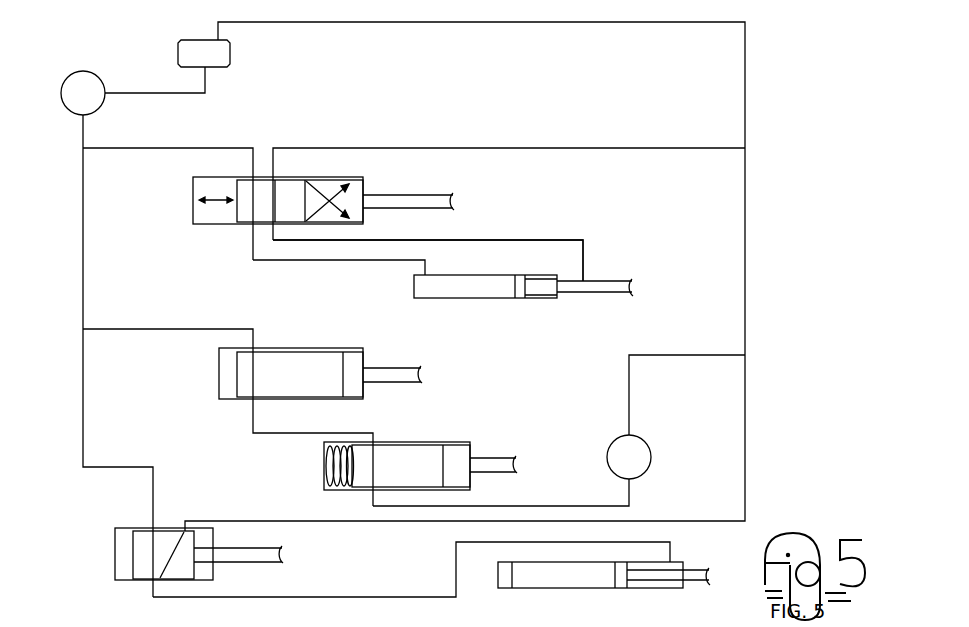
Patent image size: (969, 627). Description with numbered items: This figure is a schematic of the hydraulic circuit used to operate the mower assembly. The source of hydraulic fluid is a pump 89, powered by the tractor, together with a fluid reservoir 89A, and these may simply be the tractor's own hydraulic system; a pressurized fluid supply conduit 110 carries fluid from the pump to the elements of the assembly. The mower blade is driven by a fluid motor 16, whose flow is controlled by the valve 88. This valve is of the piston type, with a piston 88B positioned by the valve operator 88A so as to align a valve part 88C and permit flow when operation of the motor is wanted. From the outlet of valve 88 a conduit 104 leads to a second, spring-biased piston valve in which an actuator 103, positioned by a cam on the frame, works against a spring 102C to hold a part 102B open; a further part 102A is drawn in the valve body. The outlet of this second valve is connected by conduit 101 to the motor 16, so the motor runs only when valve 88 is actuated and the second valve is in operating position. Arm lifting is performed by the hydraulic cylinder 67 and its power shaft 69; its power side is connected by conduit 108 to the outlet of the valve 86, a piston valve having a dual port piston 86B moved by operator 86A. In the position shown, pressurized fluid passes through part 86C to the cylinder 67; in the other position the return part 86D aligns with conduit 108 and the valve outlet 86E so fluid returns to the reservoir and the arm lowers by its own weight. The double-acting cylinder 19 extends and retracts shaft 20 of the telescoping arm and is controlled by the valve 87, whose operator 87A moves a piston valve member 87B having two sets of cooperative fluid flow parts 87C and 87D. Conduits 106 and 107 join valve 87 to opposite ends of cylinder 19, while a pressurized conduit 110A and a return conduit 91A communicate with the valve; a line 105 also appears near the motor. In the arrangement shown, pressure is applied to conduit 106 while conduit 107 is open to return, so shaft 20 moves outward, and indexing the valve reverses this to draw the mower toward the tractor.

The fluid power motor 16 is at (638, 458).
The hydraulic cylinder 19 is at (545, 298).
The extensible power shaft 20 is at (590, 282).
The hydraulic cylinder 67 is at (542, 590).
The power shaft 69 is at (688, 553).
The valve member 86 is at (115, 565).
The operator 86A is at (238, 548).
The dual port piston 86B is at (148, 540).
The part 86C is at (150, 556).
The return part 86D is at (180, 558).
The valve outlet 86E is at (175, 520).
The valve member 87 is at (193, 200).
The operator 87A is at (418, 195).
The piston valve member 87B is at (288, 195).
The cooperative fluid flow part 87C is at (265, 177).
The cooperative fluid flow part 87D is at (345, 203).
The valve member 88 is at (219, 376).
The valve operator 88A is at (380, 368).
The piston 88B is at (305, 358).
The valve part 88C is at (258, 370).
The pump 89 is at (83, 93).
The fluid reservoir 89A is at (204, 53).
The return fluid conduit 91A is at (517, 148).
The conduit 101 is at (568, 506).
The valve spool section 102A is at (432, 455).
The part 102B is at (373, 463).
The spring 102C is at (326, 482).
The actuator 103 is at (500, 460).
The conduit 104 is at (183, 328).
The hydraulic line 105 is at (710, 355).
The cooperative fluid flow conduit 106 is at (413, 260).
The cooperative fluid flow conduit 107 is at (563, 240).
The conduit 108 is at (84, 460).
The pressurized fluid supply conduit 110 is at (107, 236).
The pressurized fluid conduit 110A is at (136, 148).